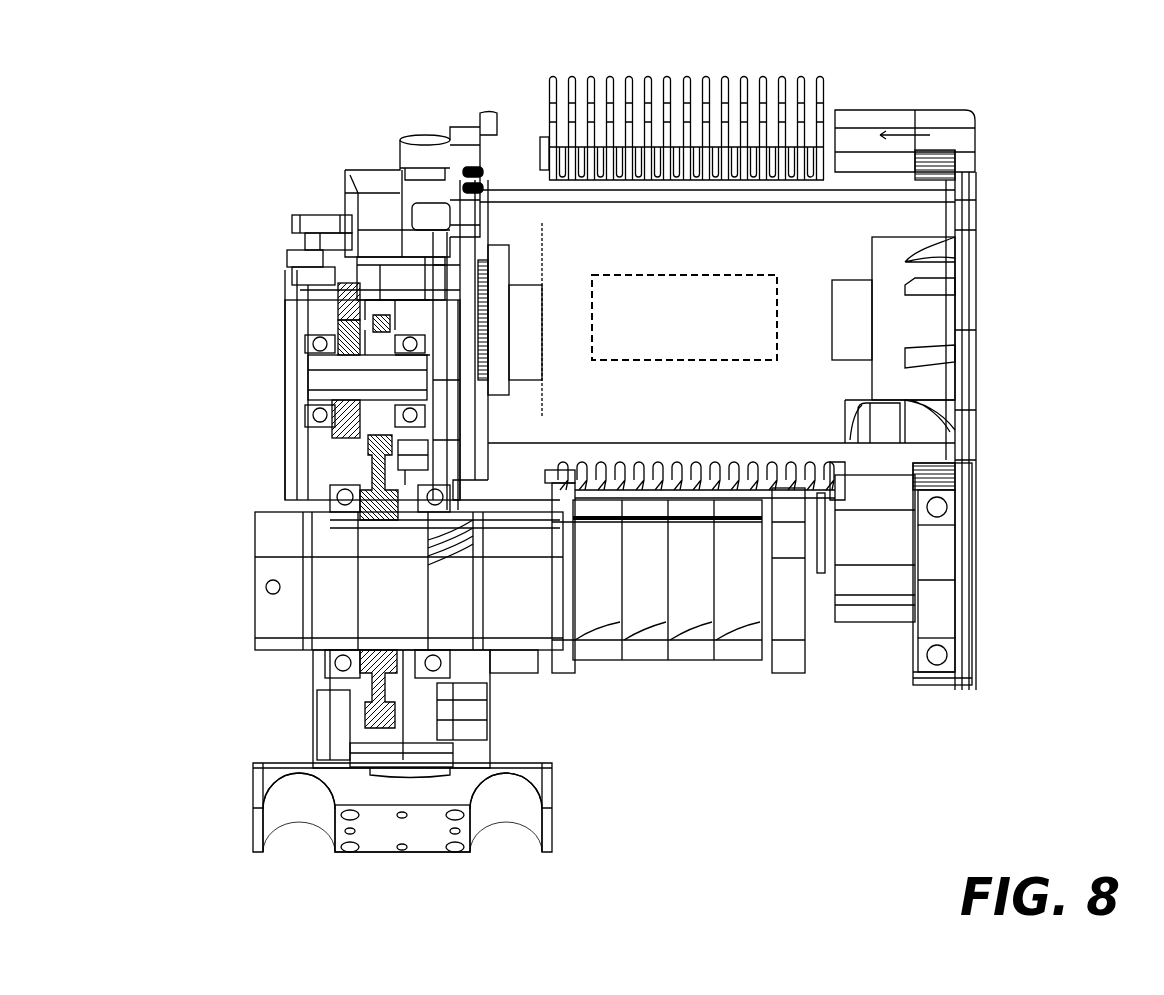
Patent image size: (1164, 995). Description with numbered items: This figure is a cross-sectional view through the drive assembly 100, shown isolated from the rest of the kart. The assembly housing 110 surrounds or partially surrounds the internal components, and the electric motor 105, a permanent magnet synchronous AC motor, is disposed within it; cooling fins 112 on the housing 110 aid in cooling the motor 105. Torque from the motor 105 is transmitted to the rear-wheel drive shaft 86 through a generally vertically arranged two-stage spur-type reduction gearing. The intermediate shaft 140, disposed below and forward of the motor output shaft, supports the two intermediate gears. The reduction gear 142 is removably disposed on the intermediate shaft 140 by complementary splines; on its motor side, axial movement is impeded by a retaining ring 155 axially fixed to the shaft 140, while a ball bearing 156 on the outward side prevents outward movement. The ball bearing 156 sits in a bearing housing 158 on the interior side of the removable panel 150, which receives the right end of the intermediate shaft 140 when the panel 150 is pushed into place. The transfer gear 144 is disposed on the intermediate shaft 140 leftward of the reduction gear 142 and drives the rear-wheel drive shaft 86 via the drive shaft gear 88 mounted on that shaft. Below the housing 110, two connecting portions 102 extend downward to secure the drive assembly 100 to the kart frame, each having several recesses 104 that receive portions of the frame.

The drive assembly 100 is at (148, 110).
The assembly housing 110 is at (383, 214).
The cooling fins 112 is at (783, 76).
The electric motor 105 is at (696, 327).
The retaining ring 155 is at (360, 302).
The reduction gear 142 is at (315, 327).
The ball bearing 156 is at (315, 336).
The removable panel 150 is at (318, 379).
The intermediate shaft 140 is at (300, 385).
The bearing housing 158 is at (300, 447).
The transfer gear 144 is at (345, 438).
The rear-wheel drive shaft 86 is at (272, 613).
The drive shaft gear 88 is at (372, 653).
The connecting portion 102 is at (425, 842).
The recesses 104 is at (298, 822).